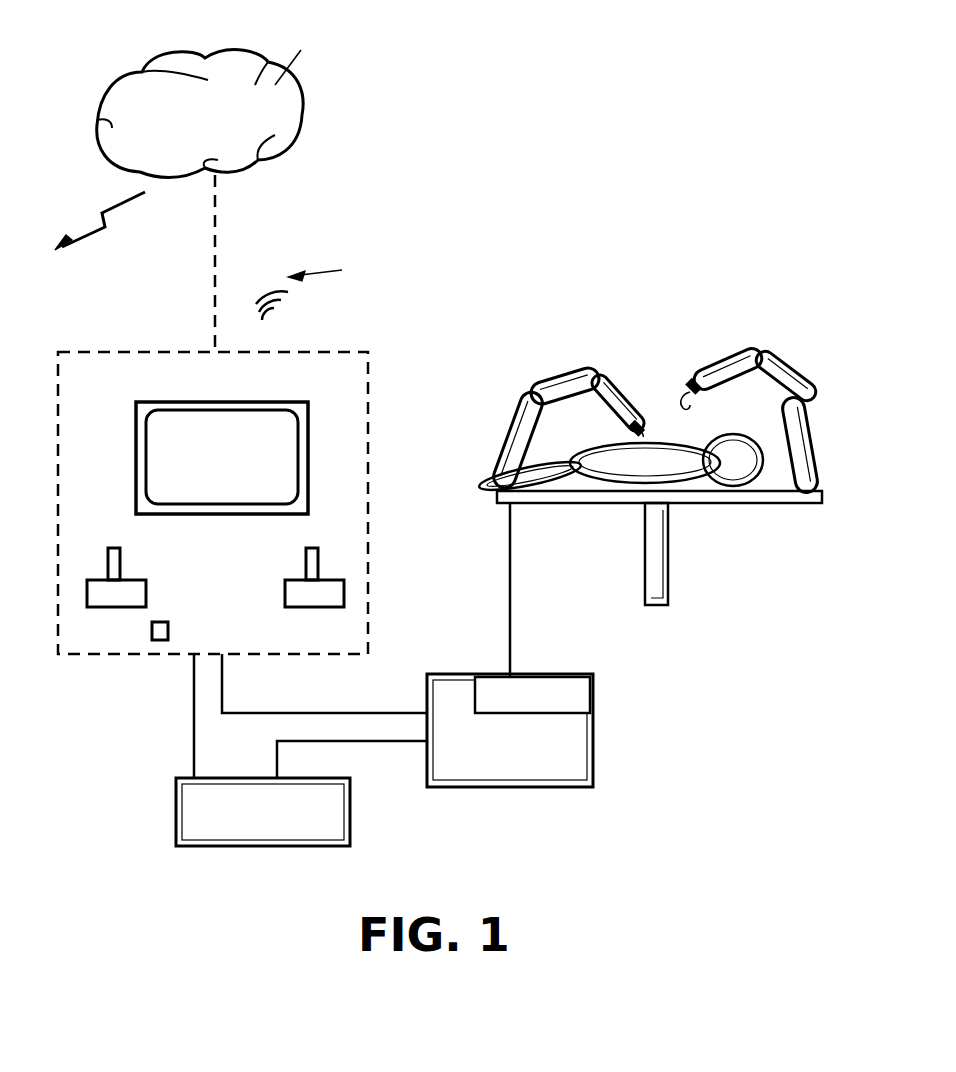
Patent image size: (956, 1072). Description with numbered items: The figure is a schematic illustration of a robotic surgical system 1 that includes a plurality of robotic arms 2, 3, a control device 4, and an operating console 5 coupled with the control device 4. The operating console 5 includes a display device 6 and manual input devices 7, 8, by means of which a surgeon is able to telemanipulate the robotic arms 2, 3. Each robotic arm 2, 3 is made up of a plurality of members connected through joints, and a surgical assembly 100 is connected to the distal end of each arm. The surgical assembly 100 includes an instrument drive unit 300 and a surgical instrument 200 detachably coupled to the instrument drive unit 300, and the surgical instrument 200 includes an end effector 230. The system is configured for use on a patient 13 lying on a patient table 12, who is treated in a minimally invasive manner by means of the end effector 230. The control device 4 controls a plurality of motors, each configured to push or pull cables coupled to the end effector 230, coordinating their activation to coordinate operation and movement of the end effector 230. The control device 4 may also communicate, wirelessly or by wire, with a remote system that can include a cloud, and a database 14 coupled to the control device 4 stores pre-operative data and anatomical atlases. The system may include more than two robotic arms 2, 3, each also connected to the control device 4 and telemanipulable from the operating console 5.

The robotic surgical system 1 is at (451, 437).
The robotic arm 2 is at (578, 398).
The robotic arm 3 is at (745, 394).
The control device 4 is at (512, 730).
The operating console 5 is at (152, 318).
The display device 6 is at (222, 458).
The manual input device 7 is at (100, 597).
The manual input device 8 is at (314, 597).
The patient table 12 is at (590, 498).
The patient 13 is at (673, 470).
The database 14 is at (263, 812).
The surgical assembly 100 is at (630, 428).
The surgical instrument 200 is at (645, 425).
The end effector 230 is at (643, 437).
The instrument drive unit 300 is at (638, 423).